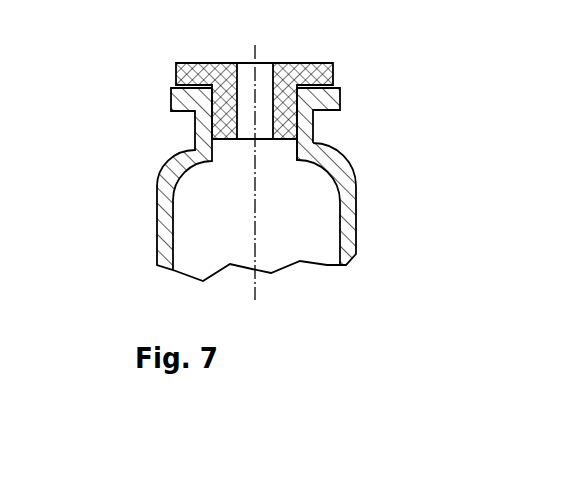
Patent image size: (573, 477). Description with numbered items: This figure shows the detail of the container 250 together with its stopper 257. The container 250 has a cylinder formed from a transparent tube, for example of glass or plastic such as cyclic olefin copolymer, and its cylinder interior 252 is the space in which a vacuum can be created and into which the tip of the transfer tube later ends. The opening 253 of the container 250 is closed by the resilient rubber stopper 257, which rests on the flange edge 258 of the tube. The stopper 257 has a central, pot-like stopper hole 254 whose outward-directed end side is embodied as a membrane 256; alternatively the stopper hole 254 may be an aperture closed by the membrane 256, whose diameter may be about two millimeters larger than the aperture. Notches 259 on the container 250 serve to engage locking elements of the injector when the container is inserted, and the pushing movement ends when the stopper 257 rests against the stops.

The container 250 is at (164, 142).
The cylinder interior 252 is at (203, 207).
The opening 253 is at (369, 194).
The stopper hole 254 is at (237, 83).
The membrane 256 is at (268, 61).
The stopper 257 is at (298, 93).
The flange edge 258 is at (323, 100).
The notches 259 is at (300, 98).